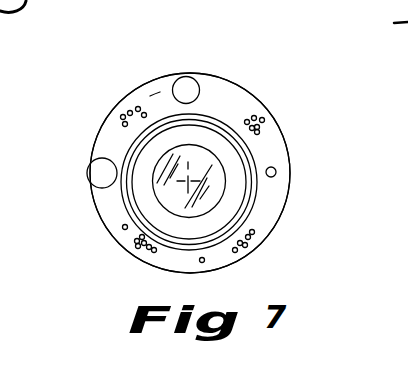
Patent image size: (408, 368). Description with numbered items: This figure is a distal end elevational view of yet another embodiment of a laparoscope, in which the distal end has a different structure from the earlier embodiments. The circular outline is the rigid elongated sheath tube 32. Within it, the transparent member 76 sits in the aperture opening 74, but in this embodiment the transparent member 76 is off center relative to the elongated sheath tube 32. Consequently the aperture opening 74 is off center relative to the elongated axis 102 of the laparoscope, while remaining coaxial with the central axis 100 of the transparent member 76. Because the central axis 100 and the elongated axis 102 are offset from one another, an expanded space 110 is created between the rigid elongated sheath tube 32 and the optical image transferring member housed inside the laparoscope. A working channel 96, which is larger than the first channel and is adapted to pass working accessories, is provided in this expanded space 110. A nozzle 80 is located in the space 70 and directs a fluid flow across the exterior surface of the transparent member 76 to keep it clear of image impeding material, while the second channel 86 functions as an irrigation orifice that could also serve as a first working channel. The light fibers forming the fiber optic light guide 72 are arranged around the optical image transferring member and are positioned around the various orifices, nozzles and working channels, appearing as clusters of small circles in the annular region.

The elongated sheath tube 32 is at (288, 220).
The space 70 is at (229, 93).
The fiber optic light guide 72 is at (254, 110).
The aperture opening 74 is at (243, 155).
The transparent member 76 is at (217, 186).
The nozzle 80 is at (102, 173).
The second channel 86 is at (276, 171).
The working channel 96 is at (188, 77).
The central axis 100 is at (184, 190).
The elongated axis 102 is at (188, 171).
The expanded space 110 is at (155, 95).